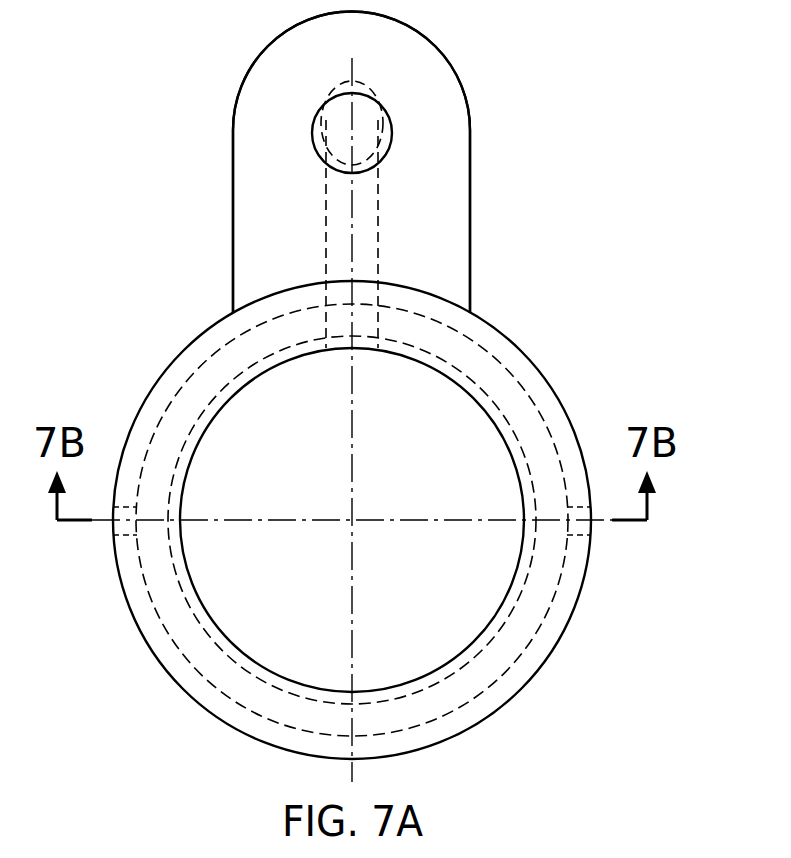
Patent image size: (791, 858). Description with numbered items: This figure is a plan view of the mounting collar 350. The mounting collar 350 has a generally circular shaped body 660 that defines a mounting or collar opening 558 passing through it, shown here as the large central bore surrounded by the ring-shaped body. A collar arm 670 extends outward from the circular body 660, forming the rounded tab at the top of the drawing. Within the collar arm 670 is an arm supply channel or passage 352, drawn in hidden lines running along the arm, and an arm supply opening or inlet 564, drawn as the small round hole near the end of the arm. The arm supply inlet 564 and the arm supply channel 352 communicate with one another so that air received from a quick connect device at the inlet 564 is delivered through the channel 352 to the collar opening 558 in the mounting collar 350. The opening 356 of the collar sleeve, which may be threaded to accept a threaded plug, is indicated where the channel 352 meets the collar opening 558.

The mounting collar 350 is at (524, 114).
The arm supply channel 352 is at (373, 240).
The opening 356 is at (357, 350).
The collar opening 558 is at (232, 613).
The arm supply inlet 564 is at (373, 117).
The circular body 660 is at (533, 363).
The collar arm 670 is at (262, 96).